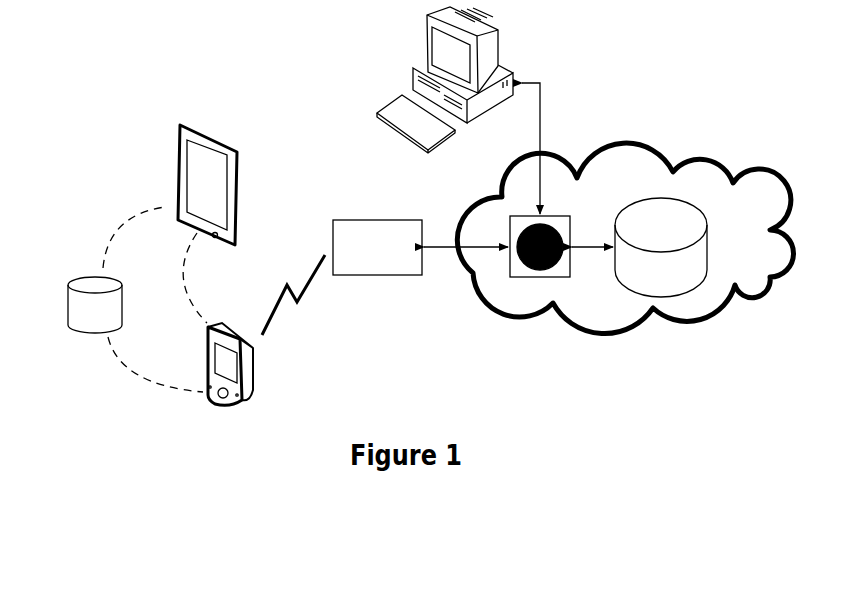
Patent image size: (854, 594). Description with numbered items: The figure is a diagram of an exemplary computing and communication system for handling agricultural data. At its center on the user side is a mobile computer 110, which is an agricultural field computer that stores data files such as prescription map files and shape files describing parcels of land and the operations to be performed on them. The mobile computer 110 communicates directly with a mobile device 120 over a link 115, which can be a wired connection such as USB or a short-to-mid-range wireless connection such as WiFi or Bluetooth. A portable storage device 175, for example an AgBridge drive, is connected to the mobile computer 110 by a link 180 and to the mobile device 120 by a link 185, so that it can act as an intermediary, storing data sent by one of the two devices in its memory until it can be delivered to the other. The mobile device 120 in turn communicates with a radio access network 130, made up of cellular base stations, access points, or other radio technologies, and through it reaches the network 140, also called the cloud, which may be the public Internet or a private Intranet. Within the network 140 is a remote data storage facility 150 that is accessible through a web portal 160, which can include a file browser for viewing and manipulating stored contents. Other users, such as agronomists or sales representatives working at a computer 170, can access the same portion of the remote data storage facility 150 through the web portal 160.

The mobile computer 110 is at (222, 173).
The link 115 is at (203, 278).
The mobile device 120 is at (255, 372).
The radio access network 130 is at (377, 234).
The network 140 is at (625, 233).
The remote data storage facility 150 is at (661, 247).
The web portal 160 is at (540, 261).
The computer 170 is at (472, 80).
The portable storage device 175 is at (95, 305).
The link 180 is at (116, 237).
The link 185 is at (145, 371).